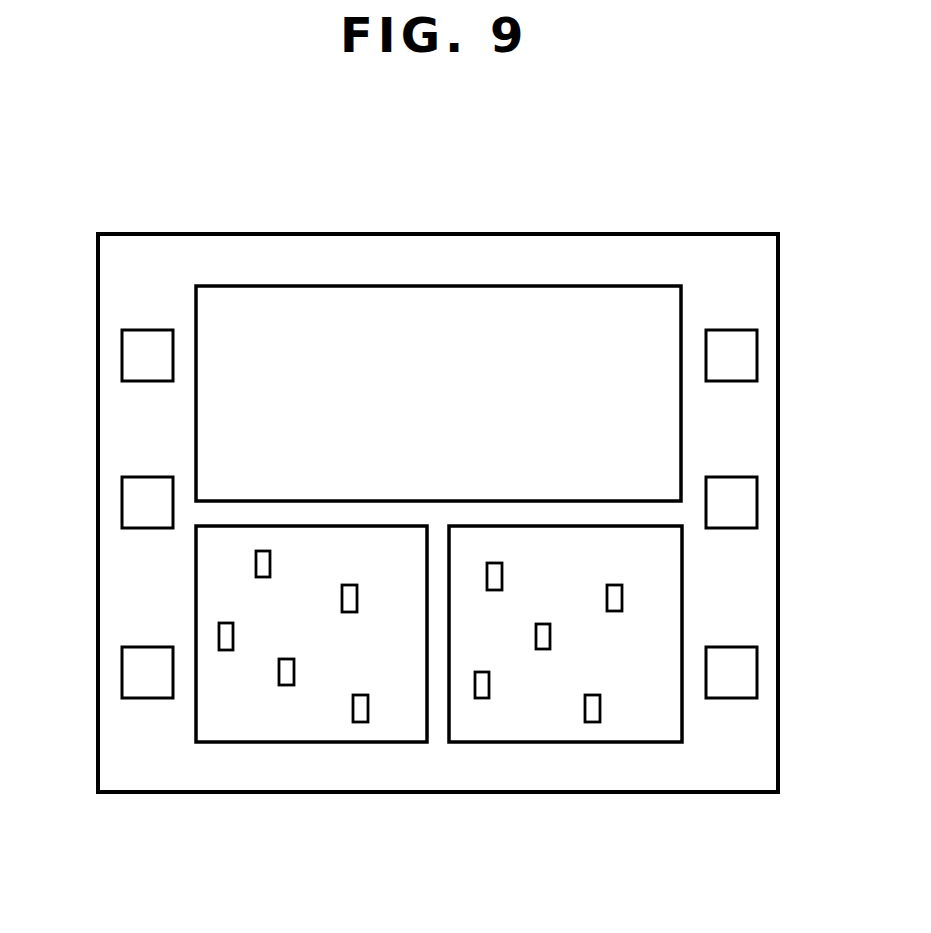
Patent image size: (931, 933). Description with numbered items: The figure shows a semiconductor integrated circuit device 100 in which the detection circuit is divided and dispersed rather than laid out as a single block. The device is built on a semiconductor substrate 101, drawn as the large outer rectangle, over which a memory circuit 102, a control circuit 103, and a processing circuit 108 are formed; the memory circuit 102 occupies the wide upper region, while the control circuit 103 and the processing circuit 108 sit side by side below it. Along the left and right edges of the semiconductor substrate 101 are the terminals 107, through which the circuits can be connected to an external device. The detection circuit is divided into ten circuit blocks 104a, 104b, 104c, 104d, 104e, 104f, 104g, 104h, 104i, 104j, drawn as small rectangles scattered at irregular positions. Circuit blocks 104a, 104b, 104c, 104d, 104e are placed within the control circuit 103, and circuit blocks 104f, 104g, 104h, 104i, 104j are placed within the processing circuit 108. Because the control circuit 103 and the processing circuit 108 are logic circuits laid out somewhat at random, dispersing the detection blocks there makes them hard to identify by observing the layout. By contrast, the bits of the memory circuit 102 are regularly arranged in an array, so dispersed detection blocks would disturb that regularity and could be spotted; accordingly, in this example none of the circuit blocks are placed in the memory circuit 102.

The semiconductor integrated circuit device 100 is at (164, 182).
The semiconductor substrate 101 is at (344, 250).
The memory circuit 102 is at (584, 300).
The control circuit 103 is at (245, 731).
The circuit block 104a is at (269, 566).
The circuit block 104b is at (354, 606).
The circuit block 104c is at (232, 638).
The circuit block 104d is at (293, 675).
The circuit block 104e is at (349, 710).
The circuit block 104f is at (501, 577).
The circuit block 104g is at (614, 585).
The circuit block 104h is at (549, 638).
The circuit block 104i is at (488, 686).
The circuit block 104j is at (599, 709).
The terminals 107 is at (732, 345).
The processing circuit 108 is at (577, 731).